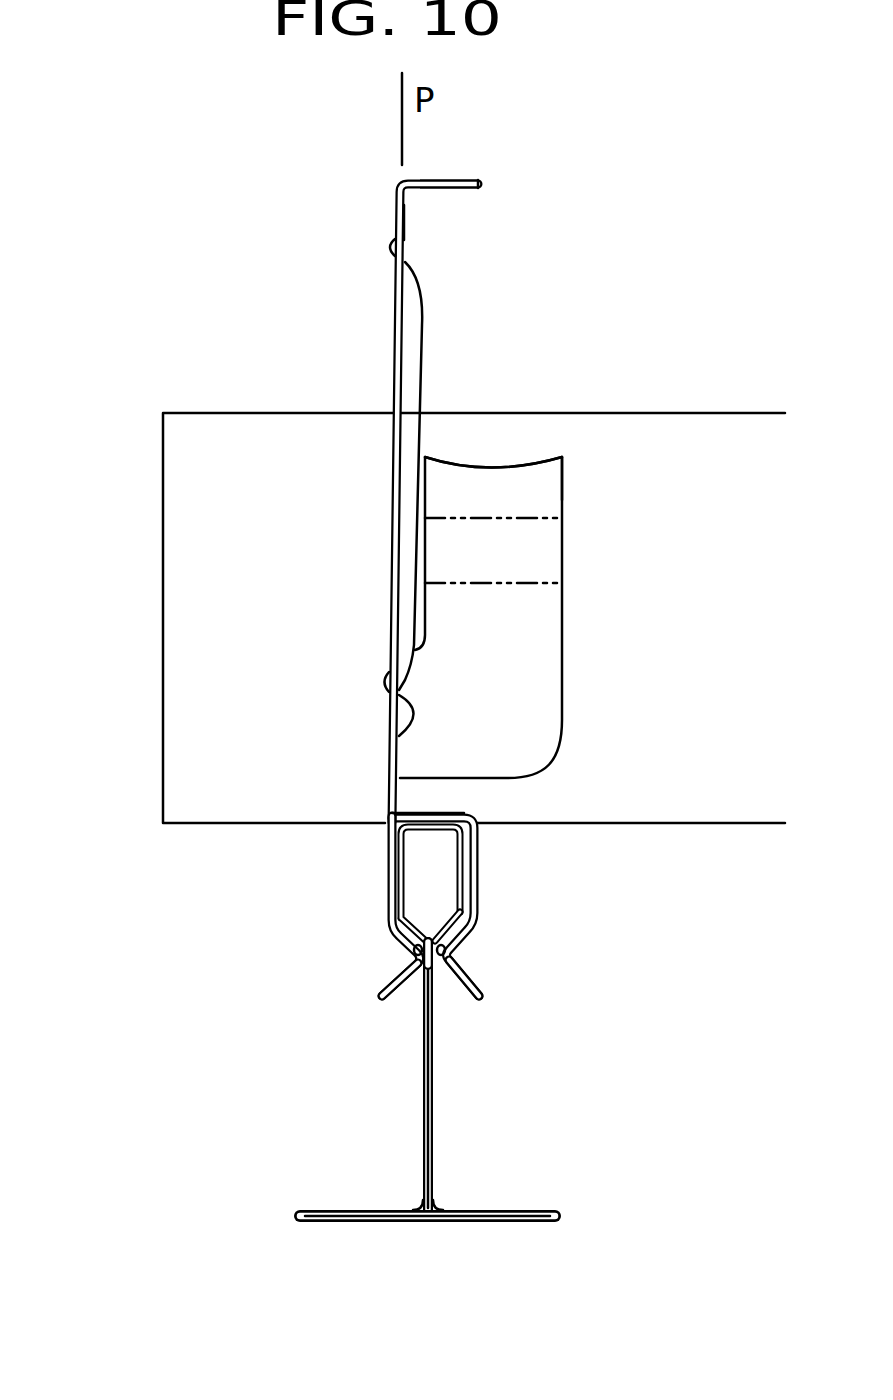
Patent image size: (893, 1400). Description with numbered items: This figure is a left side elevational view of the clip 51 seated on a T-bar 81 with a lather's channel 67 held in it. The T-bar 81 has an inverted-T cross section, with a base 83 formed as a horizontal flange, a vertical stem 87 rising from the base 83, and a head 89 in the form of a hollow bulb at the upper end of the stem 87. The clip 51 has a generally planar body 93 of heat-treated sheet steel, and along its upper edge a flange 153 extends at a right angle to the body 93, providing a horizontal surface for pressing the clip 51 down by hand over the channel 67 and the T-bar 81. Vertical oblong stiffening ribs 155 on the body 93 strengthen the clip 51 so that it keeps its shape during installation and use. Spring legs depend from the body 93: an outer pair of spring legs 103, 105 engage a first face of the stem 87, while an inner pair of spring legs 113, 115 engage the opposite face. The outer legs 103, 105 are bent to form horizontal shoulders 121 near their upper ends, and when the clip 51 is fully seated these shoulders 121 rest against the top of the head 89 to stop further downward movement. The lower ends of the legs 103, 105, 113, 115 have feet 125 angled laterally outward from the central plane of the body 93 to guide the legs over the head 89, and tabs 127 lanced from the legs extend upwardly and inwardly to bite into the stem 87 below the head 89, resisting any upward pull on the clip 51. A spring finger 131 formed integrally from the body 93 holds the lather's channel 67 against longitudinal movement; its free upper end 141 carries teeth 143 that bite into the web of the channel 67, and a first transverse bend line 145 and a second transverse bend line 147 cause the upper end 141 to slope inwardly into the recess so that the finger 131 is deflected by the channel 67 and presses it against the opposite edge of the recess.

The clip 51 is at (397, 219).
The flange 153 is at (455, 180).
The body 93 is at (408, 205).
The stiffening ribs 155 is at (415, 325).
The lather's channel 67 is at (160, 593).
The spring finger 131 is at (540, 687).
The free upper end 141 is at (483, 470).
The tooth 143 is at (565, 460).
The first transverse bend line 145 is at (548, 520).
The second transverse bend line 147 is at (548, 585).
The horizontal shoulders 121 is at (430, 813).
The outer spring leg 103 is at (474, 840).
The outer spring leg 105 is at (474, 840).
The inner spring leg 113 is at (388, 869).
The inner spring leg 115 is at (388, 869).
The head 89 is at (440, 932).
The tabs 127 is at (448, 957).
The feet 125 is at (508, 977).
The stem 87 is at (424, 1073).
The T-bar 81 is at (450, 1086).
The base 83 is at (482, 1223).